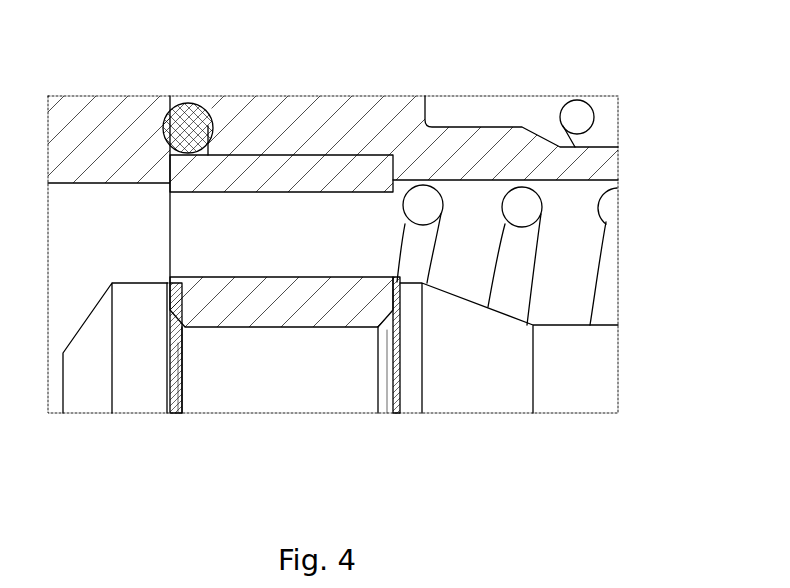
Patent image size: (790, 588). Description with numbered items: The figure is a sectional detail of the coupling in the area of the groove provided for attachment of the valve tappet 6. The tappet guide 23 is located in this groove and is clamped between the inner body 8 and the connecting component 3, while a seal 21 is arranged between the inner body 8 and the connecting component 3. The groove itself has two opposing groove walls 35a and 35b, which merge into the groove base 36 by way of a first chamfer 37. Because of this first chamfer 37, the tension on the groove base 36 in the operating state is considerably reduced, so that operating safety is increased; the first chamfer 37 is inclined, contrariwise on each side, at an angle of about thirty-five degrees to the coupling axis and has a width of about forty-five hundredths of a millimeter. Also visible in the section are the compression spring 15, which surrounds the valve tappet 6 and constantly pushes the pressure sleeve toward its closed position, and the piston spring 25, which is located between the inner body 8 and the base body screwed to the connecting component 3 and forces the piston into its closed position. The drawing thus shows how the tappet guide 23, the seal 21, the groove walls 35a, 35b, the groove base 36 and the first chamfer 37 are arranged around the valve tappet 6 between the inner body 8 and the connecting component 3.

The connecting component 3 is at (87, 130).
The inner body 8 is at (355, 125).
The seal 21 is at (188, 128).
The tappet guide 23 is at (280, 172).
The piston spring 25 is at (578, 117).
The compression spring 15 is at (525, 207).
The valve tappet 6 is at (580, 363).
The groove base 36 is at (293, 327).
The groove wall 35a is at (168, 373).
The groove wall 35b is at (392, 387).
The first chamfer 37 is at (178, 345).